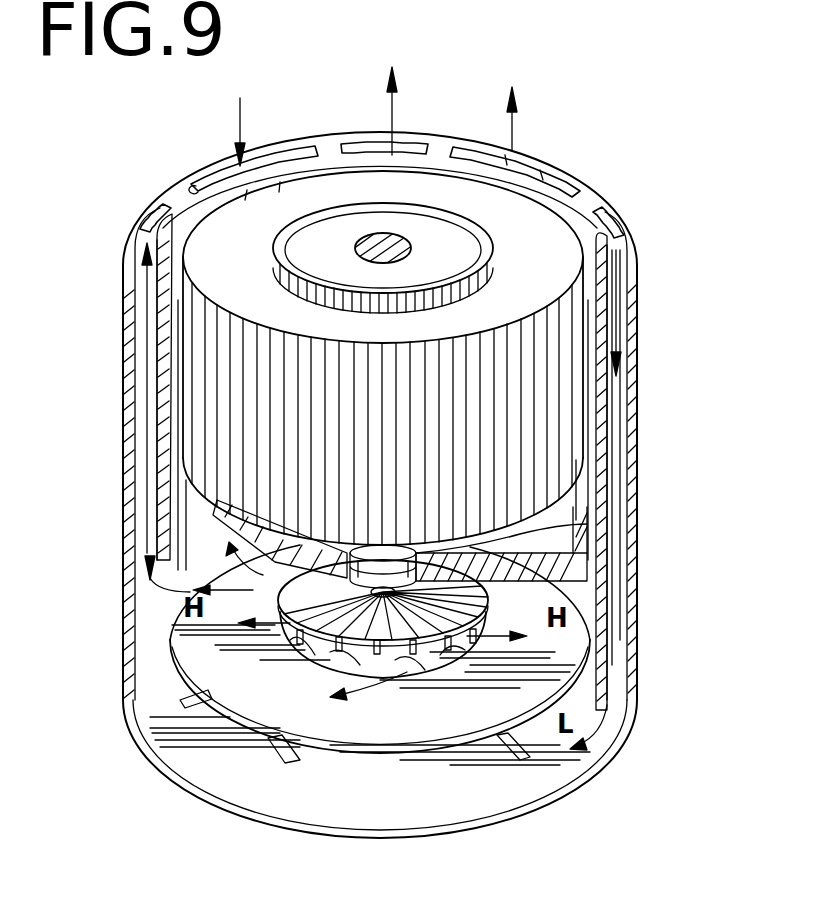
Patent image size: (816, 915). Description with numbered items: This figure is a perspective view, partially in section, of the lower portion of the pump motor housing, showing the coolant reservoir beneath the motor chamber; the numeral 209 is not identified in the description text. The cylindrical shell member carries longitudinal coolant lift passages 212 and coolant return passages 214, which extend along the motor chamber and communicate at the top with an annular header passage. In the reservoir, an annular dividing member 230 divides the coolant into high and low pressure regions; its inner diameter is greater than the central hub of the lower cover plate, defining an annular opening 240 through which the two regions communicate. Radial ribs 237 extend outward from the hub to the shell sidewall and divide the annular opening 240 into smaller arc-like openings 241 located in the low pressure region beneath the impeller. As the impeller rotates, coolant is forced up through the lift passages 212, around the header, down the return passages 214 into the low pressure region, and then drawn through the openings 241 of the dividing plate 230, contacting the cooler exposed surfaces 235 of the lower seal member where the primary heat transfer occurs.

The coolant lift passages 212 is at (186, 192).
The coolant return passages 214 is at (400, 148).
The support plate 209 is at (528, 545).
The annular dividing member 230 is at (290, 703).
The annular opening 240 is at (426, 685).
The annular openings 241 is at (305, 665).
The radial ribs 237 is at (277, 760).
The exposed surfaces 235 is at (585, 762).